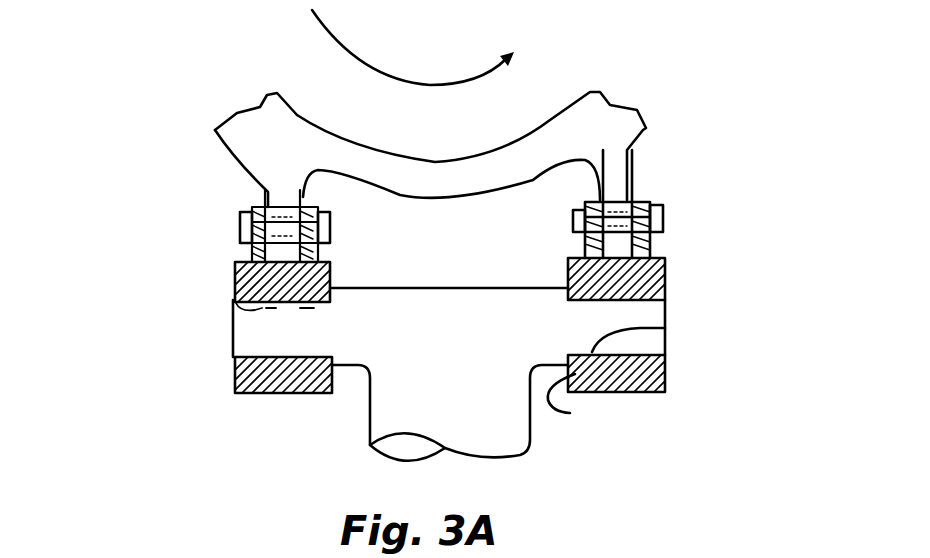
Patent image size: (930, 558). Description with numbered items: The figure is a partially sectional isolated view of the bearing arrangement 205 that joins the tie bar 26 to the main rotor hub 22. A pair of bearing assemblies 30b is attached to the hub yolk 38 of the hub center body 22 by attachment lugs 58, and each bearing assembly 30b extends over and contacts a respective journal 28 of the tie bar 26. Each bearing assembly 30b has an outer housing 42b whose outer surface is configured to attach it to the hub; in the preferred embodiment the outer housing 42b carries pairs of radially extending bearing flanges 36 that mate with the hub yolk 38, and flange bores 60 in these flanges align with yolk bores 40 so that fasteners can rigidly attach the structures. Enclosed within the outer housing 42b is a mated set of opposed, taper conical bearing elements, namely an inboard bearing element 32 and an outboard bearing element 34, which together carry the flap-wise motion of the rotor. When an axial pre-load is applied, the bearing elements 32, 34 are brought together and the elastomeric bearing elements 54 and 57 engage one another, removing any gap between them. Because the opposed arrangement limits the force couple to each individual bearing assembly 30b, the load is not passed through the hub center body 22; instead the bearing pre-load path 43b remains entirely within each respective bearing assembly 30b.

The hub mounting assembly 205 is at (147, 63).
The main rotor hub 22 is at (316, 122).
The yolk bores 40 is at (265, 195).
The attachment lugs 58 is at (252, 201).
The flange bores 60 is at (318, 213).
The bearing pre-load path 43b is at (238, 308).
The journal 28 is at (233, 348).
The elastomeric bearing element 57 is at (235, 376).
The tie bar 26 is at (512, 458).
The hub yolk 38 is at (640, 163).
The bearing flanges 36 is at (643, 183).
The bearing assembly 30b is at (670, 227).
The outer housing 42b is at (660, 265).
The elastomeric bearing element 54 is at (667, 267).
The inboard bearing element 32 is at (665, 328).
The outboard bearing element 34 is at (665, 352).